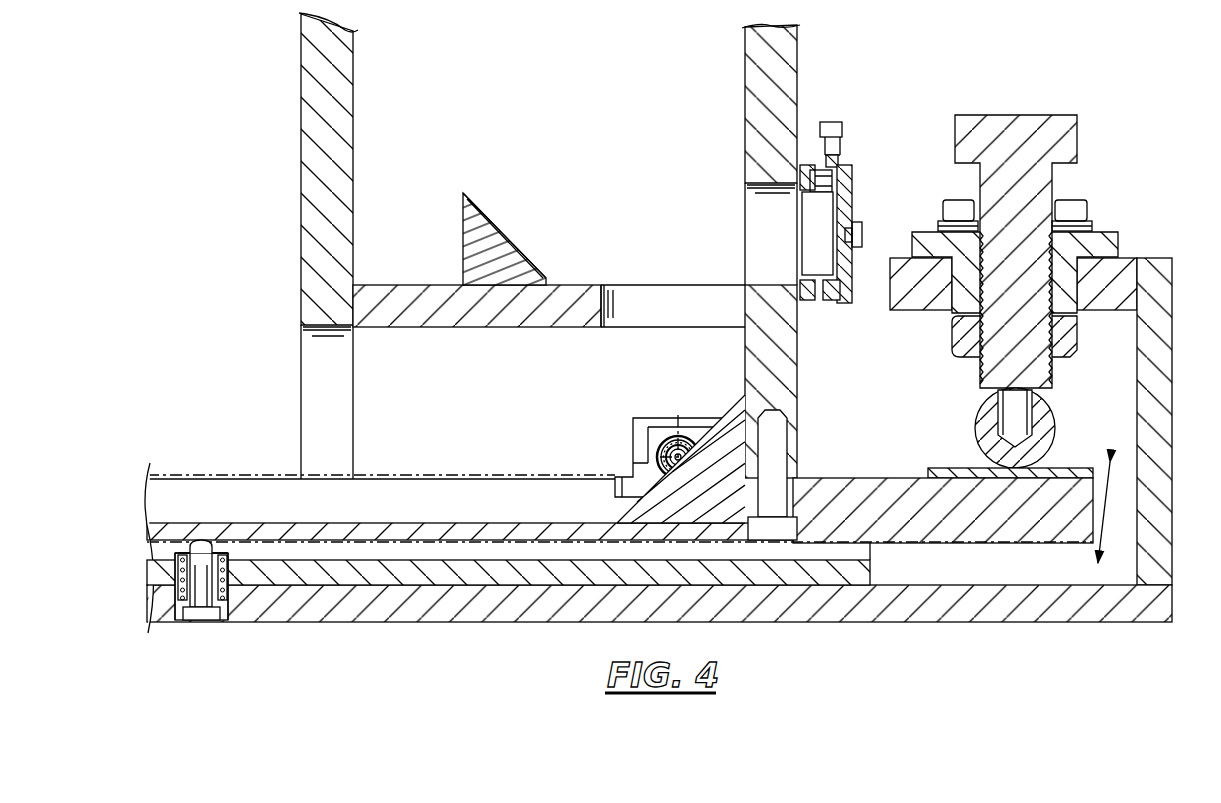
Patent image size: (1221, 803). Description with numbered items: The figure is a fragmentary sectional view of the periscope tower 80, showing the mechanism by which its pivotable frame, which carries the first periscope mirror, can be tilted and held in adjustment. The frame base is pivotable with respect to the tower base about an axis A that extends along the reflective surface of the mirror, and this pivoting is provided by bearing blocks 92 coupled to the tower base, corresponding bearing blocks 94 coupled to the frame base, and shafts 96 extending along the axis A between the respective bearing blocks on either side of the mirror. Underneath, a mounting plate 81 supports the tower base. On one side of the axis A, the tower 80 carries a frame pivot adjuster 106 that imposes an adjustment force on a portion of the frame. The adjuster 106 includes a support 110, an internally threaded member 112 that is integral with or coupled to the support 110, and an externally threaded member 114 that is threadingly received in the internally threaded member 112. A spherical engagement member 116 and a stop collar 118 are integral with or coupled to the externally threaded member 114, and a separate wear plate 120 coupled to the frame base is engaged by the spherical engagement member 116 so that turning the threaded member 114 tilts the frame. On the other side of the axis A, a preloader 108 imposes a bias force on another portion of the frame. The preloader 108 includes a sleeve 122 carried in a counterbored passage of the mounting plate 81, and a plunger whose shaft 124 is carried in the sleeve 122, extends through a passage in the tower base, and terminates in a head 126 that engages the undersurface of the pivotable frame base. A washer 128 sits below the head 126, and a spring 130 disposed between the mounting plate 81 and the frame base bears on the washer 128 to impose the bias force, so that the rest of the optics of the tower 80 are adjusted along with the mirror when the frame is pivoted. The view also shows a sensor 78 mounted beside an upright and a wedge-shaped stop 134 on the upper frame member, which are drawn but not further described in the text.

The periscope tower 80 is at (213, 148).
The sensor 78 is at (864, 140).
The wedge stop 134 is at (531, 238).
The externally threaded member 114 is at (1042, 134).
The frame pivot adjuster 106 is at (1114, 184).
The internally threaded member 112 is at (1126, 235).
The support 110 is at (1171, 256).
The stop collar 118 is at (967, 335).
The spherical engagement member 116 is at (1046, 421).
The wear plate 120 is at (1070, 468).
The bearing block 94 is at (638, 419).
The bearing block 92 is at (651, 437).
The shaft 96 is at (683, 440).
The axis A is at (672, 445).
The mounting plate 81 is at (140, 604).
The spring 130 is at (228, 576).
The sleeve 122 is at (226, 610).
The shaft 124 is at (199, 564).
The preloader 108 is at (197, 633).
The head 126 is at (208, 540).
The washer 128 is at (184, 557).